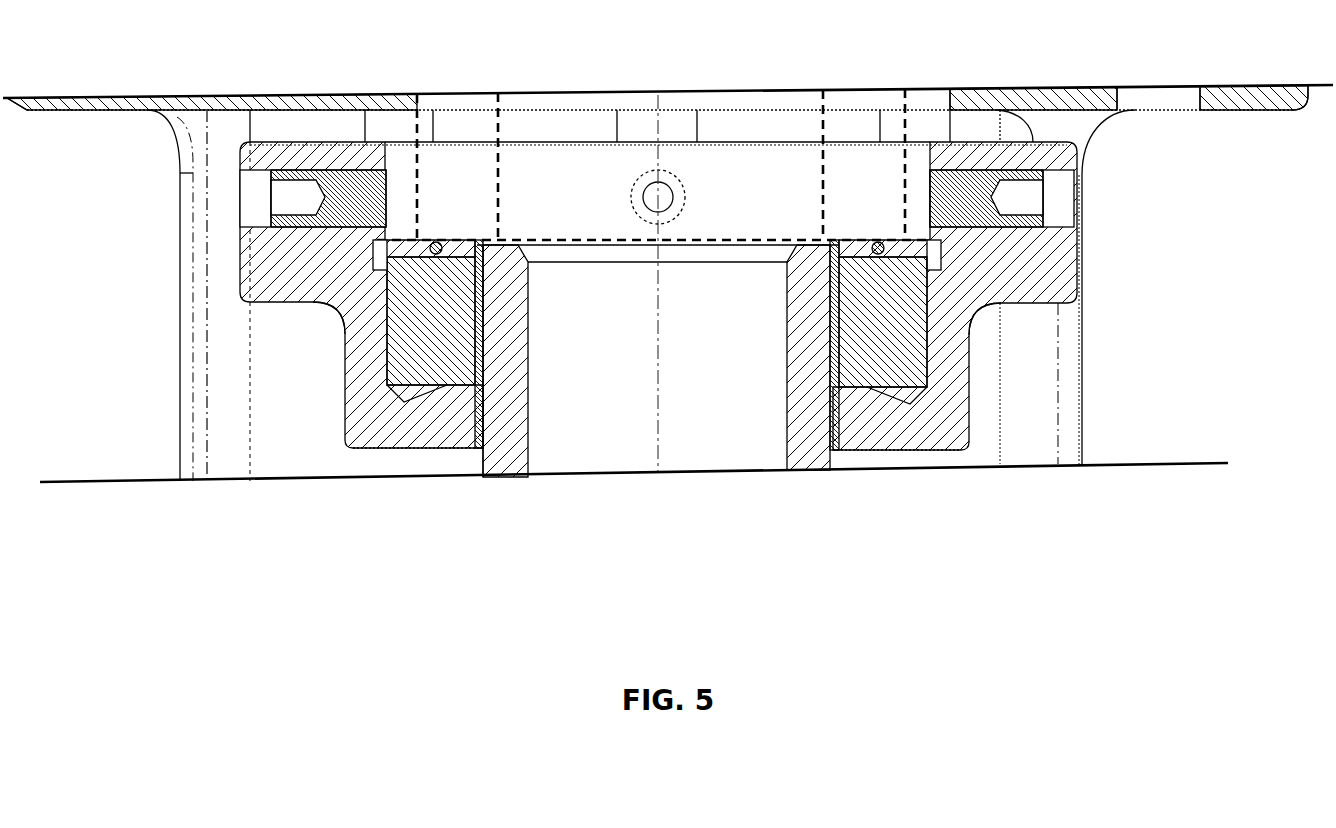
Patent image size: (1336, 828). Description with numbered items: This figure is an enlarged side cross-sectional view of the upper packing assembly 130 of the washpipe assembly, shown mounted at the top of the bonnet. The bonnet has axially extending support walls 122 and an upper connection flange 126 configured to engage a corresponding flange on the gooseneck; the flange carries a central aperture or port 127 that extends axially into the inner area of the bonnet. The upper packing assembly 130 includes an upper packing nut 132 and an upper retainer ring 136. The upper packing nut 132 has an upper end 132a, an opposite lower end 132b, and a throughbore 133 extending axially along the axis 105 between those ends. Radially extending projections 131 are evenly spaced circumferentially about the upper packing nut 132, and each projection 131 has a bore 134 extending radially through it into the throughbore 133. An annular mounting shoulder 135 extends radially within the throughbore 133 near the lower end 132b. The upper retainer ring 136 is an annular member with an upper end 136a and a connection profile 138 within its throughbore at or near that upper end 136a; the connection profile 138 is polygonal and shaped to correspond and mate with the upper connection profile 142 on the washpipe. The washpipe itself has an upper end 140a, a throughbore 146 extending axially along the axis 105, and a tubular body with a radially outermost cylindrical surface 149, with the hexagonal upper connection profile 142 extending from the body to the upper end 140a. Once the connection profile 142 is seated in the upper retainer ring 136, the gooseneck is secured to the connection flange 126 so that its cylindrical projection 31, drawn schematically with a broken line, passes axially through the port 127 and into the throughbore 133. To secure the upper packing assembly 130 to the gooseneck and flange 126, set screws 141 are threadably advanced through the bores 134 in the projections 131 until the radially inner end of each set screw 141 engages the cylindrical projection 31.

The cylindrical projection 31 is at (823, 101).
The axis 105 is at (656, 366).
The support walls 122 is at (180, 307).
The upper connection flange 126 is at (1251, 112).
The central aperture or port 127 is at (950, 97).
The upper packing assembly 130 is at (1143, 219).
The radially extending projections 131 is at (283, 304).
The upper packing nut 132 is at (1094, 290).
The upper end 132a is at (683, 130).
The lower end 132b is at (881, 466).
The throughbore 133 is at (525, 161).
The bore 134 is at (246, 181).
The annular mounting shoulder 135 is at (897, 389).
The upper retainer ring 136 is at (375, 354).
The upper end 136a is at (400, 227).
The connection profile 138 is at (840, 269).
The upper end 140a is at (765, 233).
The set screws 141 is at (270, 208).
The upper connection profile 142 is at (495, 277).
The throughbore 146 is at (528, 448).
The radially outermost cylindrical surface 149 is at (485, 456).